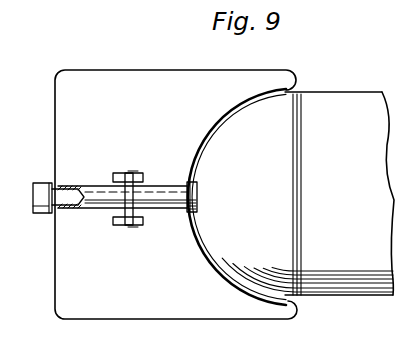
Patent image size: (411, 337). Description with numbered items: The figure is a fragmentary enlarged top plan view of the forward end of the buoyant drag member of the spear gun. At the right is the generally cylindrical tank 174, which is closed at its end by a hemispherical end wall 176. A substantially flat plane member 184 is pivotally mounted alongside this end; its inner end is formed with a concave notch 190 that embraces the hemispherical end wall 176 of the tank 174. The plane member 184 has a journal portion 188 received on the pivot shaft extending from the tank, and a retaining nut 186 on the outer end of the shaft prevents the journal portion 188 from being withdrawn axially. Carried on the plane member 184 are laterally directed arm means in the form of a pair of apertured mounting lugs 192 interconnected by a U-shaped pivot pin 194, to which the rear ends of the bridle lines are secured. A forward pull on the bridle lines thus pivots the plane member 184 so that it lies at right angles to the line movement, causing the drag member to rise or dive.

The cylindrical tank 174 is at (327, 92).
The hemispherical end wall 176 is at (213, 151).
The plane member 184 is at (93, 66).
The retaining nut 186 is at (40, 183).
The journal portion 188 is at (105, 208).
The concave notch 190 is at (203, 249).
The apertured mounting lugs 192 is at (135, 172).
The U-shaped pivot pin 194 is at (128, 200).